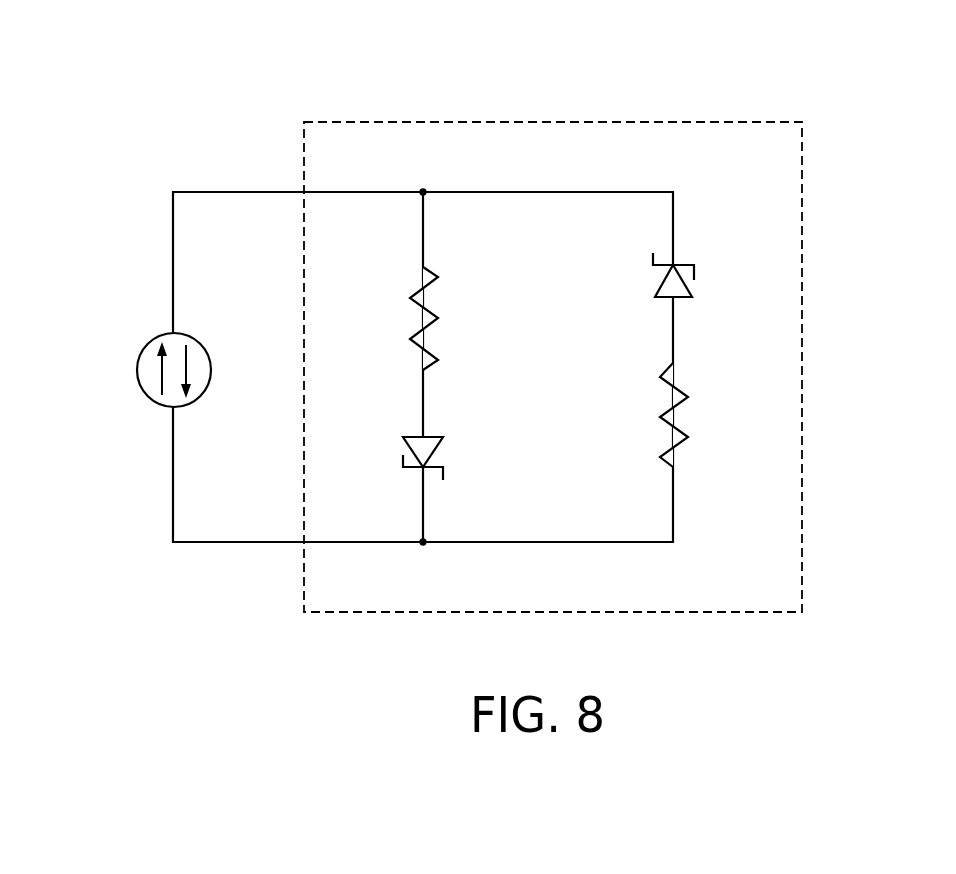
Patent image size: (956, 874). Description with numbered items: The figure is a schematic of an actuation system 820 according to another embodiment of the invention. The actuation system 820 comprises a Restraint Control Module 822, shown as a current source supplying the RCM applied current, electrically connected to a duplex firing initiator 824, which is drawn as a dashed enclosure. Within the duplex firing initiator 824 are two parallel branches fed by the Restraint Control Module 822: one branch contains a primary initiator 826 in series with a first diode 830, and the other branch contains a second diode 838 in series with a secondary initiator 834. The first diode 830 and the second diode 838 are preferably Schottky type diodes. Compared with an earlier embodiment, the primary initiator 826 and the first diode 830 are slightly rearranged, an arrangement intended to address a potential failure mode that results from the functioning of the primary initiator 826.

The actuation system 820 is at (228, 125).
The Restraint Control Module 822 is at (155, 337).
The duplex firing initiator 824 is at (553, 122).
The primary initiator 826 is at (430, 305).
The first diode 830 is at (430, 434).
The secondary initiator 834 is at (678, 446).
The second diode 838 is at (685, 299).